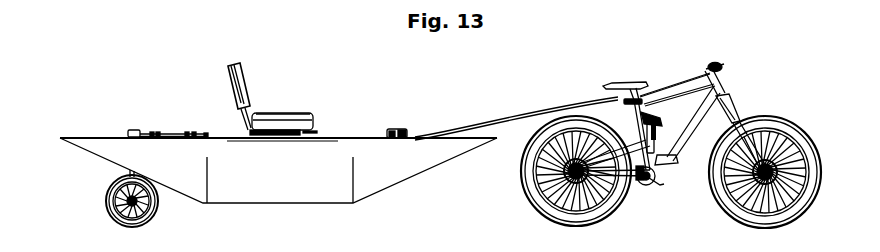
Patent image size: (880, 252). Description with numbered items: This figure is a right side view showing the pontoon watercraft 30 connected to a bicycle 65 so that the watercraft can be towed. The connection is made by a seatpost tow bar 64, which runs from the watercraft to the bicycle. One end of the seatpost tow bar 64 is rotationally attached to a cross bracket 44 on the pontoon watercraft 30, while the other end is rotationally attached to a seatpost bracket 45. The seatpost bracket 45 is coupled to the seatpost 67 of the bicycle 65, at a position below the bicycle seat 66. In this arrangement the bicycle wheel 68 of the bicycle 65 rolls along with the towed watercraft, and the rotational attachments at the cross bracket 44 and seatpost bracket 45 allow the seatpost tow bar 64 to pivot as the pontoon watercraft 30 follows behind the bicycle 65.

The pontoon watercraft 30 is at (356, 130).
The cross bracket 44 is at (398, 127).
The seatpost bracket 45 is at (656, 85).
The seatpost tow bar 64 is at (515, 108).
The bicycle 65 is at (727, 67).
The bicycle seat 66 is at (620, 82).
The seatpost 67 is at (672, 83).
The bicycle wheel 68 is at (525, 181).